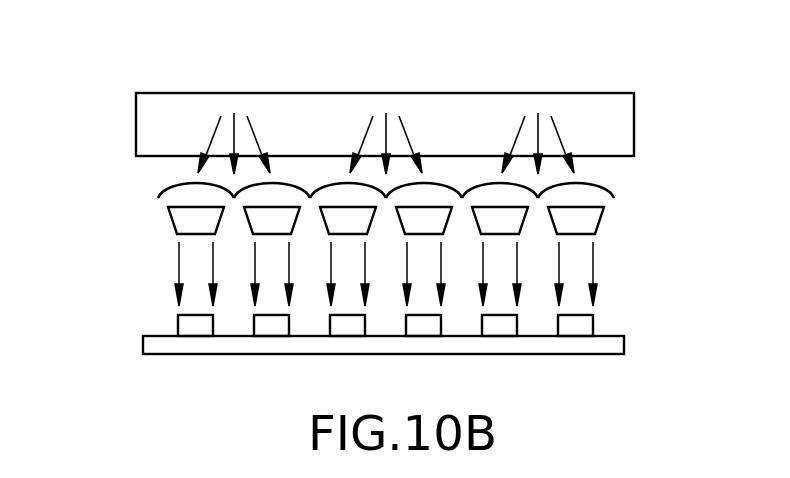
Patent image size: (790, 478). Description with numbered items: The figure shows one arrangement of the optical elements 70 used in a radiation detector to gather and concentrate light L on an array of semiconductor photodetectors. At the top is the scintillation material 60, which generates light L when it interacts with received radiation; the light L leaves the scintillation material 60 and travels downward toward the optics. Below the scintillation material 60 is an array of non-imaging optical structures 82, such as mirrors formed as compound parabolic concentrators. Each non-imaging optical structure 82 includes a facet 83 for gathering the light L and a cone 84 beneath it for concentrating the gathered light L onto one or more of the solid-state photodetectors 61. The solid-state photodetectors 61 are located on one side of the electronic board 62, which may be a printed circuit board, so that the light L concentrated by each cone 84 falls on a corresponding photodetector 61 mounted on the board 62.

The scintillation material 60 is at (140, 93).
The solid-state photodetectors 61 is at (178, 325).
The electronic board 62 is at (146, 355).
The optical elements 70 is at (372, 219).
The non-imaging optical structures 82 is at (372, 219).
The facet 83 is at (602, 188).
The cone 84 is at (601, 213).
The light L is at (593, 258).